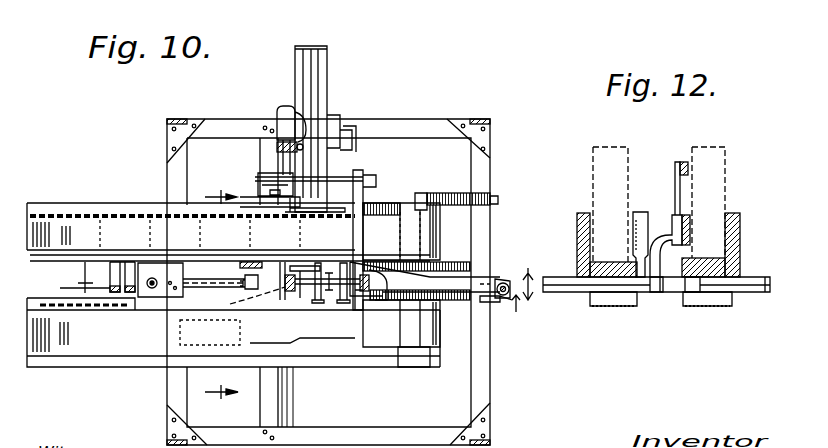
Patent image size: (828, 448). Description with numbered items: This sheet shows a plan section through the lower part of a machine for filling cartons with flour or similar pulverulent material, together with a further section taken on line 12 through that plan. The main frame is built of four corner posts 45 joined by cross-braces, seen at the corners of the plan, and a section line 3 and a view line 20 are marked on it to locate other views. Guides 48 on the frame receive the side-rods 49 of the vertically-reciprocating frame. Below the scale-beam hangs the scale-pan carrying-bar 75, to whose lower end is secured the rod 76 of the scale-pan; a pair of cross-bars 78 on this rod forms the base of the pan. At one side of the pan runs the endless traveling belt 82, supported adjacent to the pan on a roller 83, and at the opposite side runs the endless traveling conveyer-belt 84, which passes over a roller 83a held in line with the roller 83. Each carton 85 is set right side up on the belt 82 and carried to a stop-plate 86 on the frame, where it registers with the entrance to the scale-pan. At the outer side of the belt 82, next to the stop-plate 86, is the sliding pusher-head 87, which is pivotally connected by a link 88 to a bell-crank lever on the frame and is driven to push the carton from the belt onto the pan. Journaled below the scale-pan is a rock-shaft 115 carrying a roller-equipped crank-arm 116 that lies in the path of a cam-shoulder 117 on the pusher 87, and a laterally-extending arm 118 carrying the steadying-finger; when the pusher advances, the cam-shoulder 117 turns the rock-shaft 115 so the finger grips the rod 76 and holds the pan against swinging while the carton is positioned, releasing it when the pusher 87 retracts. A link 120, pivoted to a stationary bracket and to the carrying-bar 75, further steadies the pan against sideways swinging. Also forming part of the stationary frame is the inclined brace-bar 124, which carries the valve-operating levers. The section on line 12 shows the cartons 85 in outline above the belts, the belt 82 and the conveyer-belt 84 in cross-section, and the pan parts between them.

In FIG. 10, the section line 3 is at (304, 281).
In FIG. 10, the section line 12 is at (221, 294).
In FIG. 10, the view line 20 is at (331, 321).
In FIG. 10, the corner posts 45 is at (169, 120).
In FIG. 10, the guides 48 is at (505, 299).
In FIG. 10, the side-rods 49 is at (502, 282).
In FIG. 10, the scale-pan carrying-bar 75 is at (372, 293).
In FIG. 10, the rod 76 is at (301, 292).
In FIG. 10, the cross-bars 78 is at (344, 303).
In FIG. 10, the endless traveling belt 82 is at (423, 237).
In FIG. 12, the endless traveling belt 82 is at (710, 257).
In FIG. 10, the roller 83 is at (436, 205).
In FIG. 10, the roller 83a is at (430, 350).
In FIG. 10, the endless traveling conveyer-belt 84 is at (375, 345).
In FIG. 12, the endless traveling conveyer-belt 84 is at (612, 262).
In FIG. 10, the carton 85 is at (140, 218).
In FIG. 12, the carton 85 is at (690, 150).
In FIG. 10, the stop-plate 86 is at (361, 201).
In FIG. 10, the sliding pusher-head 87 is at (320, 93).
In FIG. 10, the link 88 is at (335, 128).
In FIG. 10, the rock-shaft 115 is at (293, 396).
In FIG. 10, the crank-arm 116 is at (277, 147).
In FIG. 10, the cam-shoulder 117 is at (288, 106).
In FIG. 10, the arm 118 is at (306, 270).
In FIG. 10, the link 120 is at (464, 293).
In FIG. 10, the inclined brace-bar 124 is at (243, 266).